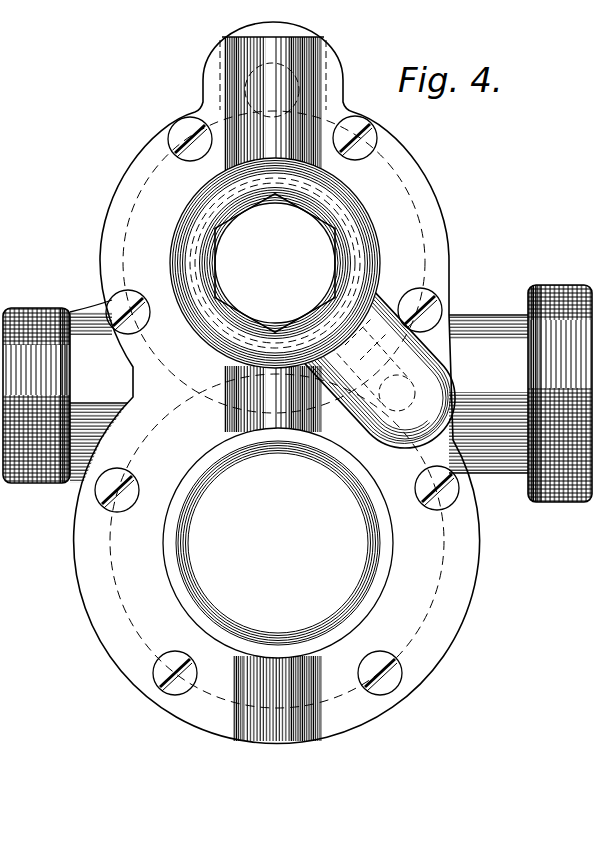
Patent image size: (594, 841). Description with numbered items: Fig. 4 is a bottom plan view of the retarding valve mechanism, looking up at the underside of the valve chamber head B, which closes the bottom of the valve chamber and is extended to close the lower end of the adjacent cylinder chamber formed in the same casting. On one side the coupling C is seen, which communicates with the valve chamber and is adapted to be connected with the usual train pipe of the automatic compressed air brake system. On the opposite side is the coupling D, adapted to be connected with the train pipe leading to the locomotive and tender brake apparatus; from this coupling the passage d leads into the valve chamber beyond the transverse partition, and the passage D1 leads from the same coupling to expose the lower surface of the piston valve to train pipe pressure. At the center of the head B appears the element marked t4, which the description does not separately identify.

The valve chamber head B is at (277, 382).
The coupling C is at (65, 391).
The coupling D is at (558, 305).
The passage D1 is at (455, 368).
The passage d is at (380, 370).
The hexagonal nut t4 is at (275, 263).